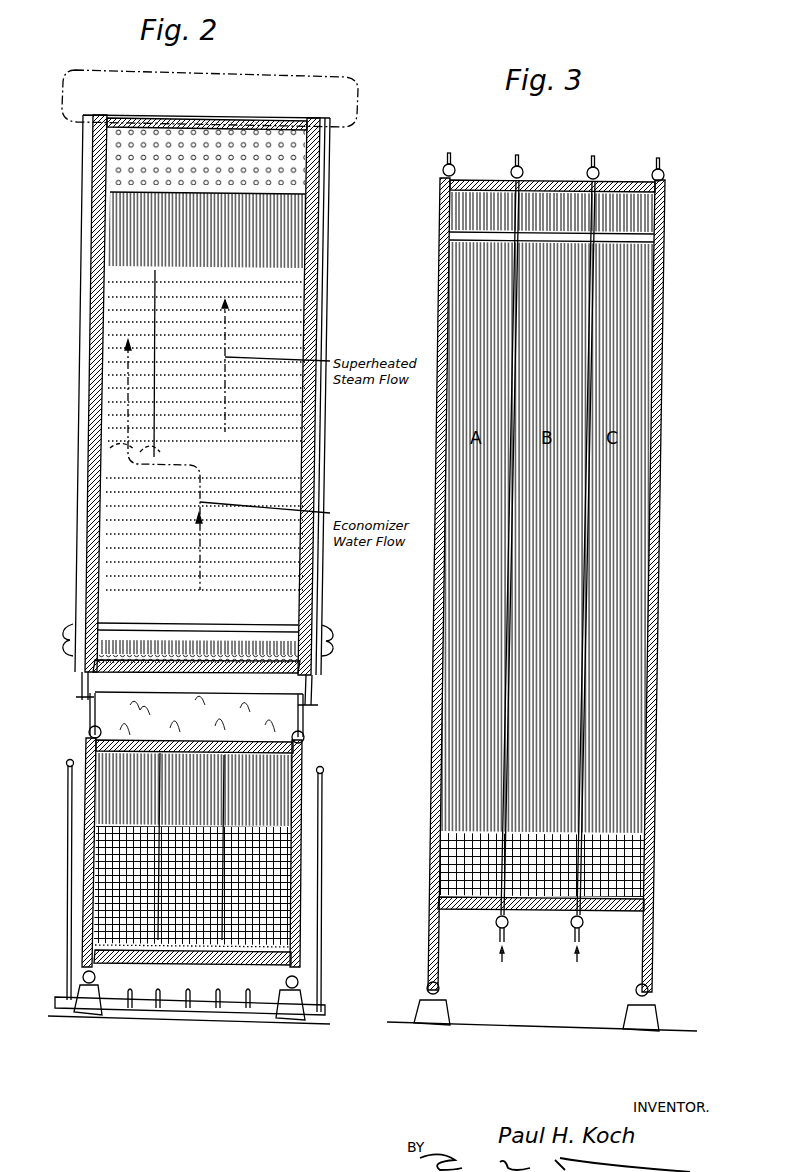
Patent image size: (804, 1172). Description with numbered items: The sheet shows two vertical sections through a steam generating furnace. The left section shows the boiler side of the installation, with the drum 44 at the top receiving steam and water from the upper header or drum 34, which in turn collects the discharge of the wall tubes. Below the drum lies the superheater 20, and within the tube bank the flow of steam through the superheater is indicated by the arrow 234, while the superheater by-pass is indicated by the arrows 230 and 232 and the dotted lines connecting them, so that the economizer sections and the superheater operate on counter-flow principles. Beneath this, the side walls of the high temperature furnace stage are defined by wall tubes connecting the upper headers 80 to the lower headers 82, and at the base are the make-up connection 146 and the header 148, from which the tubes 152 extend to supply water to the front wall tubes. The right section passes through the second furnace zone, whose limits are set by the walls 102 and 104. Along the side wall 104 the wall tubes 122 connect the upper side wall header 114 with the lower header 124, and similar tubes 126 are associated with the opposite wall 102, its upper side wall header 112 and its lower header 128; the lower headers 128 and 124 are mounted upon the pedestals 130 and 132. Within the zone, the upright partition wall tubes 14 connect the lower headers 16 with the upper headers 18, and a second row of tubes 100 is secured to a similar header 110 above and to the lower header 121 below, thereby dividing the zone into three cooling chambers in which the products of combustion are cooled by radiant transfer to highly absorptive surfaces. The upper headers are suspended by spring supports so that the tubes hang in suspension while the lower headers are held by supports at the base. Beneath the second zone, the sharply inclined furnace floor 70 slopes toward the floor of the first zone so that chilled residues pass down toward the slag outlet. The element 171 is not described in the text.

In FIG. 2, the drum 44 is at (257, 70).
In FIG. 2, the arrow 234 is at (230, 300).
In FIG. 2, the arrow 230 is at (125, 348).
In FIG. 2, the arrow 232 is at (197, 535).
In FIG. 2, the superheater 20 is at (303, 427).
In FIG. 2, the upper header or drum 34 is at (333, 631).
In FIG. 2, the upper headers 80 is at (305, 737).
In FIG. 2, the make-up connection 146 is at (345, 831).
In FIG. 2, the lower headers 82 is at (286, 982).
In FIG. 2, the header 148 is at (325, 1005).
In FIG. 2, the tubes 152 is at (132, 995).
In FIG. 3, the wall 102 is at (440, 463).
In FIG. 3, the side wall 104 is at (657, 490).
In FIG. 3, the wall tubes 122 is at (650, 598).
In FIG. 3, the tubes 126 is at (442, 588).
In FIG. 3, the upper side wall header 112 is at (445, 167).
In FIG. 3, the headers 18 is at (522, 167).
In FIG. 3, the header 110 is at (598, 168).
In FIG. 3, the upper side wall header 114 is at (664, 173).
In FIG. 3, the partition tubes 171 is at (572, 183).
In FIG. 3, the tubes 100 is at (588, 366).
In FIG. 3, the upright partition wall tubes 14 is at (507, 592).
In FIG. 3, the furnace floor 70 is at (545, 906).
In FIG. 3, the headers 16 is at (497, 925).
In FIG. 3, the lower header 121 is at (584, 924).
In FIG. 3, the lower header 128 is at (428, 984).
In FIG. 3, the lower header 124 is at (650, 988).
In FIG. 3, the pedestal 130 is at (445, 1002).
In FIG. 3, the pedestal 132 is at (630, 1003).